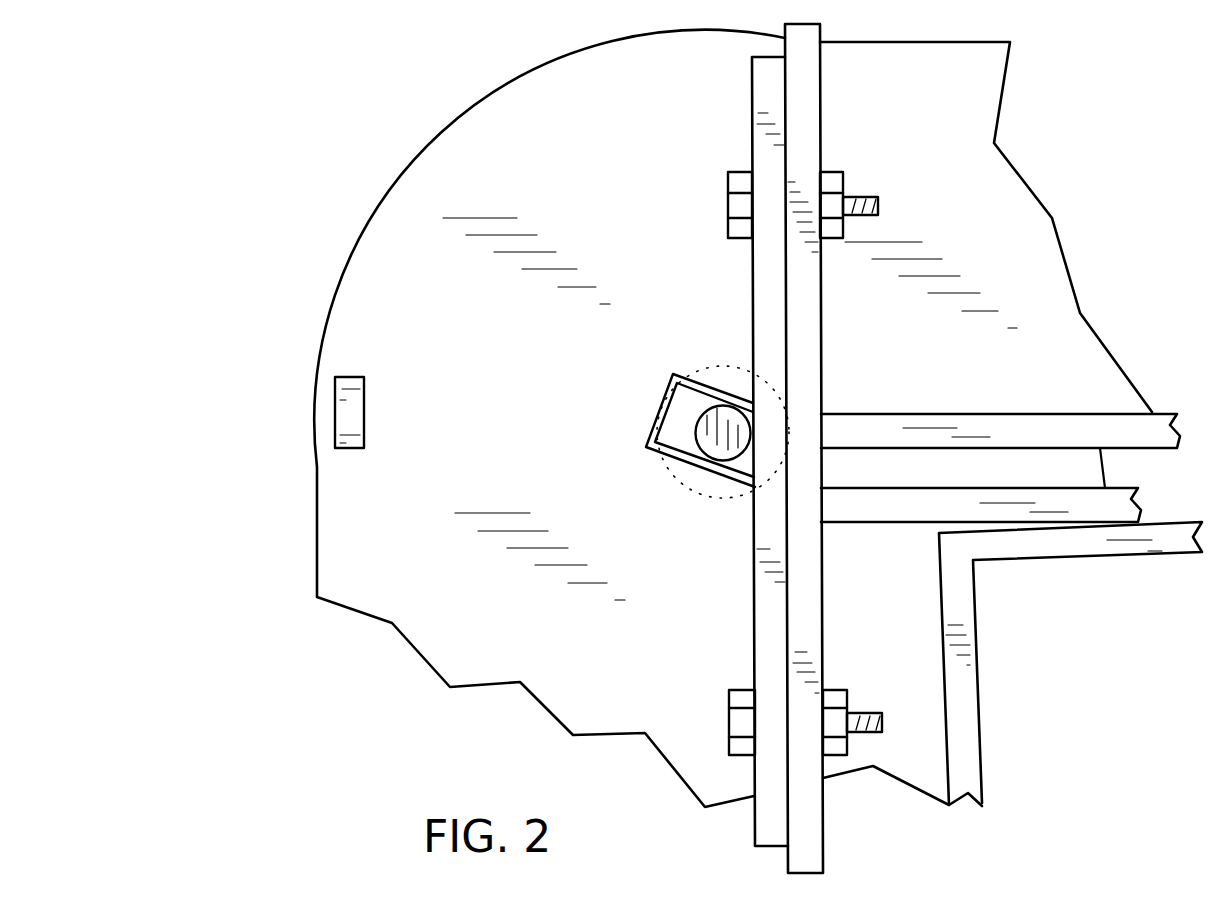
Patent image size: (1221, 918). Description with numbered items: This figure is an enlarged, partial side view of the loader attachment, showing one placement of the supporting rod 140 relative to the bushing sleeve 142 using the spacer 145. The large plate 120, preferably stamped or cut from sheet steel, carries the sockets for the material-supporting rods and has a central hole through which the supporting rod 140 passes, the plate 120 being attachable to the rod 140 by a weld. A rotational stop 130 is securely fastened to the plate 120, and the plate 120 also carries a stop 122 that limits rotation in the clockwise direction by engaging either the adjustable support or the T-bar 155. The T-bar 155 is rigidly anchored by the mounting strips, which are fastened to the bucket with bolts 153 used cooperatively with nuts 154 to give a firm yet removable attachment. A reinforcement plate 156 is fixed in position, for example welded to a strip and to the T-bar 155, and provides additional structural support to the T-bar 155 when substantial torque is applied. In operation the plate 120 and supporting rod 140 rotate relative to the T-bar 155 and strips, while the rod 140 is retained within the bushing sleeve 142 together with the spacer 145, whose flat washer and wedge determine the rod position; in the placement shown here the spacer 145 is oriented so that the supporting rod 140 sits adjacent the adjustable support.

The plate 120 is at (382, 237).
The stop 122 is at (345, 412).
The rotational stop 130 is at (1033, 548).
The supporting rod 140 is at (717, 420).
The bushing sleeve 142 is at (667, 455).
The spacer 145 is at (718, 496).
The bolt 153 is at (735, 182).
The nut 154 is at (830, 183).
The T-bar 155 is at (803, 102).
The reinforcement plate 156 is at (997, 228).